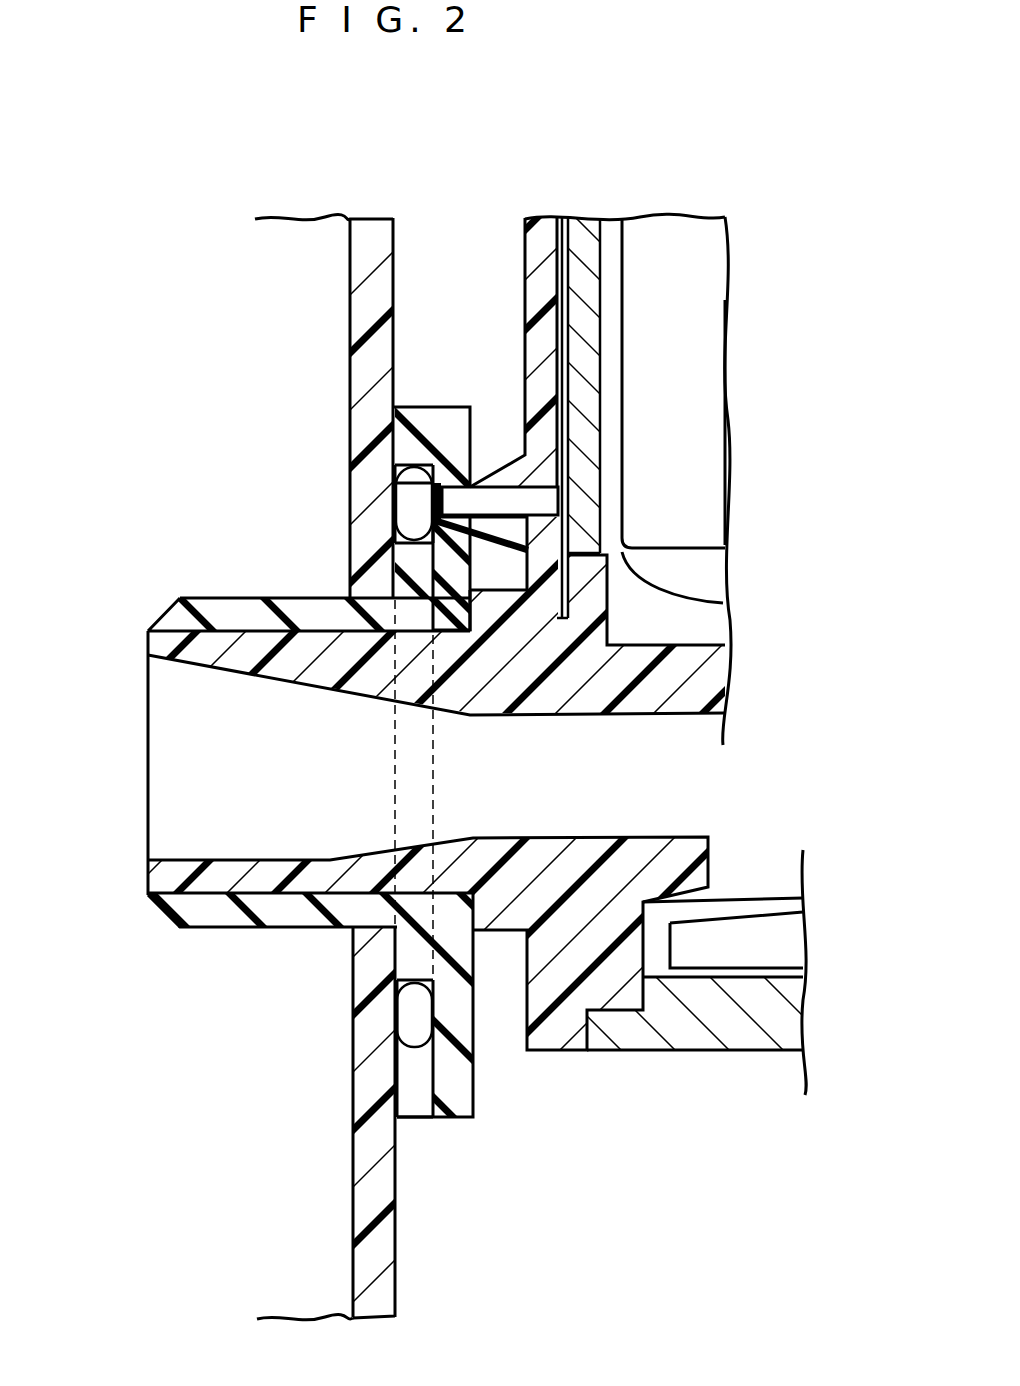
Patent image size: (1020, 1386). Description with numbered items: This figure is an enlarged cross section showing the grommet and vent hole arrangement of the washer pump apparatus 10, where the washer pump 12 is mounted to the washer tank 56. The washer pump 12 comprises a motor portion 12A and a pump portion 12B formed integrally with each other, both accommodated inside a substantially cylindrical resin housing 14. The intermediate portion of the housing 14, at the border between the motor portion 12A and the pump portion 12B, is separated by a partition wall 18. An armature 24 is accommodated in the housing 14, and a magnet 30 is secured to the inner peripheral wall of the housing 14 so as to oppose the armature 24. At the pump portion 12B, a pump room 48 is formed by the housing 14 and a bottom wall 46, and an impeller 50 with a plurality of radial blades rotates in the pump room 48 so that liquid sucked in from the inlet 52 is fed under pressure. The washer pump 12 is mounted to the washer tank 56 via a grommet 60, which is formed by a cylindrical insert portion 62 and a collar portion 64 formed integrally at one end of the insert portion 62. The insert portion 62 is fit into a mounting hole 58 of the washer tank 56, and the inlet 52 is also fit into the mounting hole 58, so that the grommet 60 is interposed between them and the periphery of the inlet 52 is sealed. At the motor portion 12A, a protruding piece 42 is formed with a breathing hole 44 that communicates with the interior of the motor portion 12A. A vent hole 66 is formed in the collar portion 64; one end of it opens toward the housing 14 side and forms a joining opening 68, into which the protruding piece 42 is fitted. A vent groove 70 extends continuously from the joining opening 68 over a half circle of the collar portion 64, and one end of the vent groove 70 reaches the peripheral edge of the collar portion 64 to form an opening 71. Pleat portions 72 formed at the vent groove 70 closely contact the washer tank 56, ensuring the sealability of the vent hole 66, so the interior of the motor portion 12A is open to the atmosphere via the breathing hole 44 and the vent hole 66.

The mechanical seal assembly 10 is at (556, 207).
The washer pump 12 is at (834, 478).
The motor portion 12A is at (740, 483).
The pump portion 12B is at (746, 742).
The housing 14 is at (525, 296).
The partition wall 18 is at (670, 715).
The armature 24 is at (677, 238).
The magnet 30 is at (592, 291).
The protruding piece 42 is at (497, 560).
The breathing hole 44 is at (533, 516).
The bottom wall 46 is at (650, 1051).
The pump room 48 is at (770, 868).
The impeller 50 is at (738, 978).
The inlet 52 is at (148, 771).
The washer tank 56 is at (397, 1238).
The mounting hole 58 is at (356, 614).
The grommet 60 is at (318, 1040).
The insert portion 62 is at (232, 936).
The collar portion 64 is at (407, 956).
The vent hole 66 is at (395, 500).
The joining opening 68 is at (492, 490).
The vent groove 70 is at (398, 503).
The opening 71 is at (407, 1120).
The pleat portion 72 is at (417, 998).